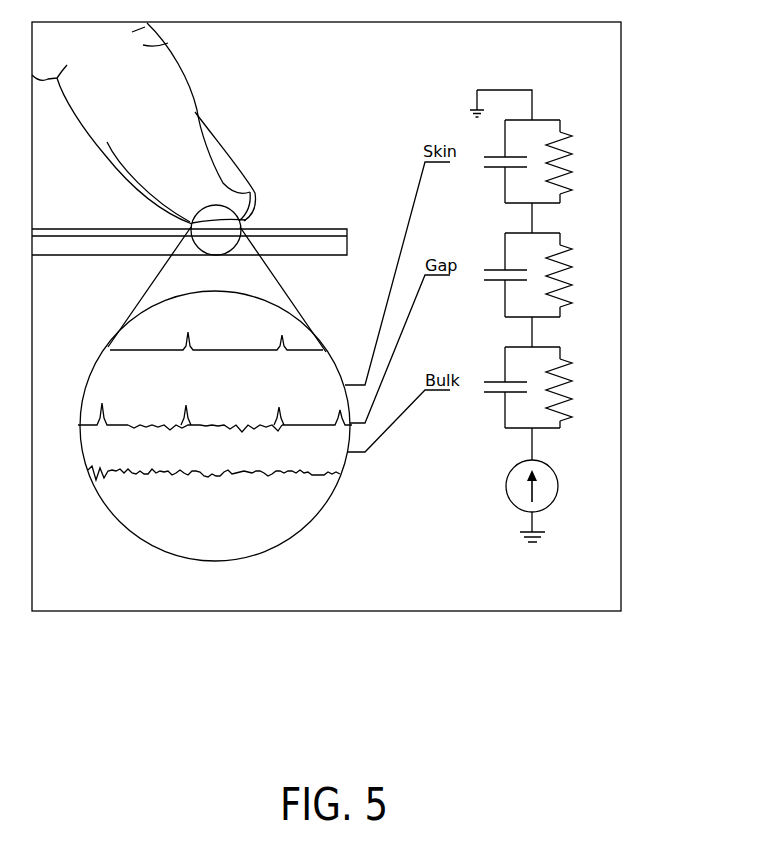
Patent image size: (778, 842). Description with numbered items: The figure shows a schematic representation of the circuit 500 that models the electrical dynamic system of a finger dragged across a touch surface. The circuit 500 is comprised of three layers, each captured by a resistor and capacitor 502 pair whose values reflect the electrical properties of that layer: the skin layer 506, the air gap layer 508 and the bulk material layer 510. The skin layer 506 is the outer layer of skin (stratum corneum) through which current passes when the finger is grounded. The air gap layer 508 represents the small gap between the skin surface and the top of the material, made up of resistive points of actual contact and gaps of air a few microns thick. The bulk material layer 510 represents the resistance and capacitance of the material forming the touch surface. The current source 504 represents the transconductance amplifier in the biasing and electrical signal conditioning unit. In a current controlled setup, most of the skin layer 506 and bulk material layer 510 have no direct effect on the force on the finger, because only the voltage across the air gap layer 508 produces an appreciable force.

The circuit 500 is at (589, 118).
The capacitor 502 is at (510, 157).
The current source 504 is at (550, 498).
The skin layer 506 is at (507, 106).
The air gap layer 508 is at (480, 230).
The bulk material layer 510 is at (480, 408).